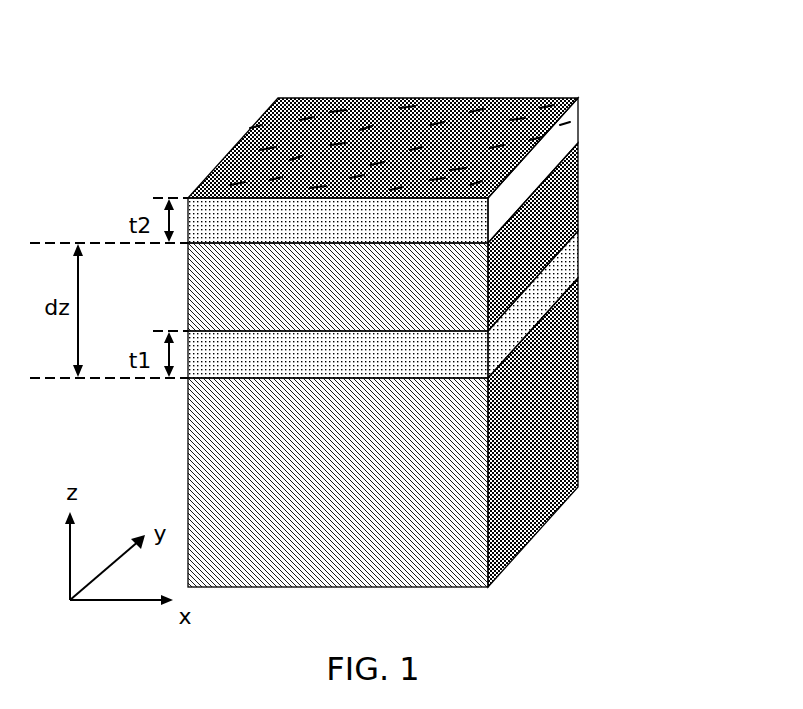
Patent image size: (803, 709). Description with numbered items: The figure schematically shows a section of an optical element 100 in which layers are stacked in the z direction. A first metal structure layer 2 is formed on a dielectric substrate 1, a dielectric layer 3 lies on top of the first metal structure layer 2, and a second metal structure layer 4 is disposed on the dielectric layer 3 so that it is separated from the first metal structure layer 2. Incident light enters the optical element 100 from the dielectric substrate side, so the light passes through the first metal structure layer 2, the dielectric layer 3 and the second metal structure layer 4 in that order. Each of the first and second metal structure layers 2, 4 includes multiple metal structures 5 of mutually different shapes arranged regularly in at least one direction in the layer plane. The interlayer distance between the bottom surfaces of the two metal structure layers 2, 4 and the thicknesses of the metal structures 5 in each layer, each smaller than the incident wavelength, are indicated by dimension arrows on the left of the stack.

The optical element 100 is at (401, 303).
The dielectric substrate 1 is at (545, 420).
The first metal structure layer 2 is at (553, 298).
The dielectric layer 3 is at (553, 228).
The second metal structure layer 4 is at (553, 172).
The metal structures 5 is at (575, 93).